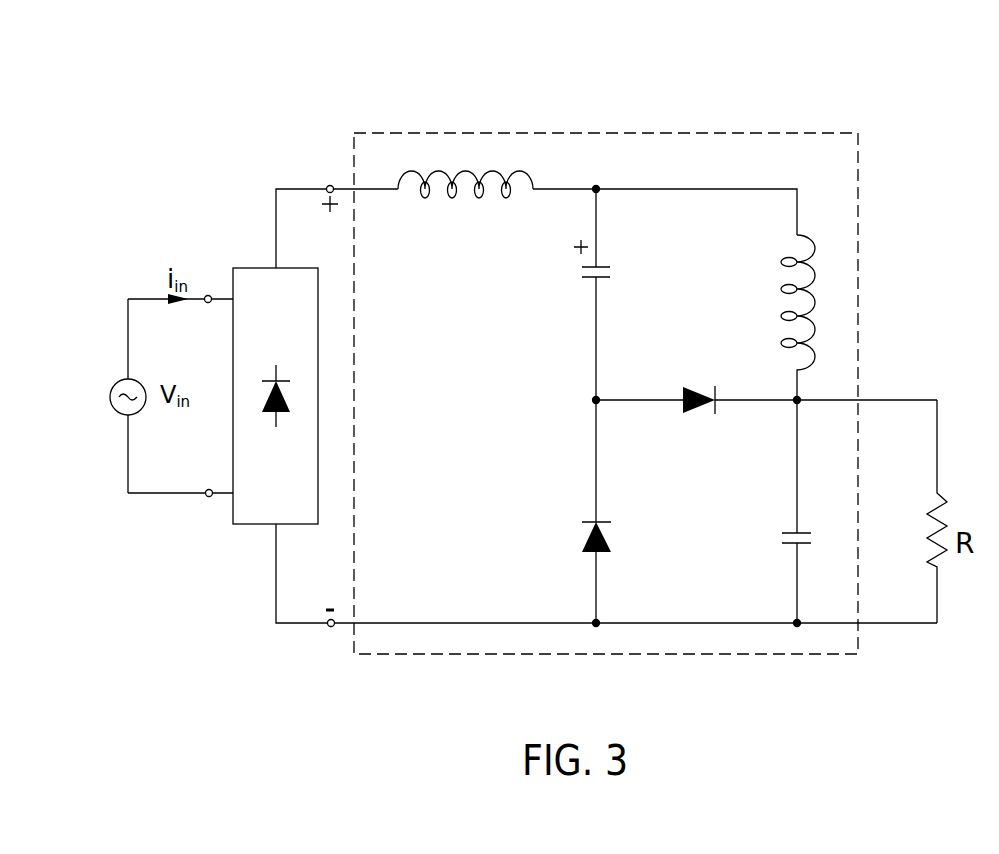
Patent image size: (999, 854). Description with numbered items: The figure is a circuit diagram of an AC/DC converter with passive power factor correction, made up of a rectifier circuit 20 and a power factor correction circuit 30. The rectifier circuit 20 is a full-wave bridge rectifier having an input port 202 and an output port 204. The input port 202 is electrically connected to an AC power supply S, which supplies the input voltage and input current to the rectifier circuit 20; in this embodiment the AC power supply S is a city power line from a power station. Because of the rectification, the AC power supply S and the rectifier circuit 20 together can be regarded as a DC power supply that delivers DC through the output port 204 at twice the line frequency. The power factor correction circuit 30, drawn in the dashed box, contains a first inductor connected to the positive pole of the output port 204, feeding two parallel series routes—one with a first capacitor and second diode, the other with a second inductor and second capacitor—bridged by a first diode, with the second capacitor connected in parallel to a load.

The rectifier circuit 20 is at (232, 512).
The input port 202 is at (208, 295).
The output port 204 is at (330, 186).
The power factor correction circuit 30 is at (648, 132).
The AC power supply S is at (112, 405).